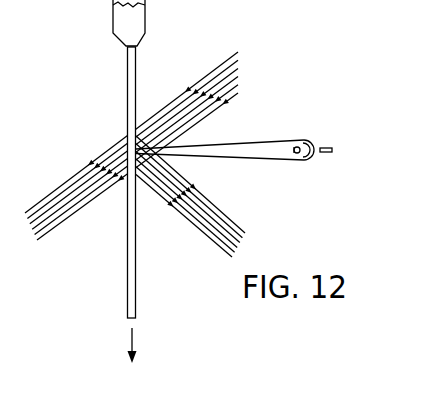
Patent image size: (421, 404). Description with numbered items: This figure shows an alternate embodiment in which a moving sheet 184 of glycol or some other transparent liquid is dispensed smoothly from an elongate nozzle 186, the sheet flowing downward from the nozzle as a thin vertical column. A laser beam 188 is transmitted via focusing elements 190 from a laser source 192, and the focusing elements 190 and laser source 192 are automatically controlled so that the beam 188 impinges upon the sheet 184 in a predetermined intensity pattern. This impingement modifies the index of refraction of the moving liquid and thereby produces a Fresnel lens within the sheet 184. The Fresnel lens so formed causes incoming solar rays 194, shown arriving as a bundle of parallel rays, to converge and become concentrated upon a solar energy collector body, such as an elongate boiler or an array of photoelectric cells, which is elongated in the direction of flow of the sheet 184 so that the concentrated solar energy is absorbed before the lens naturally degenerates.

The moving sheet 184 is at (127, 259).
The elongate nozzle 186 is at (116, 37).
The laser beam 188 is at (263, 157).
The focusing elements 190 is at (305, 139).
The laser source 192 is at (328, 153).
The incoming solar rays 194 is at (218, 84).